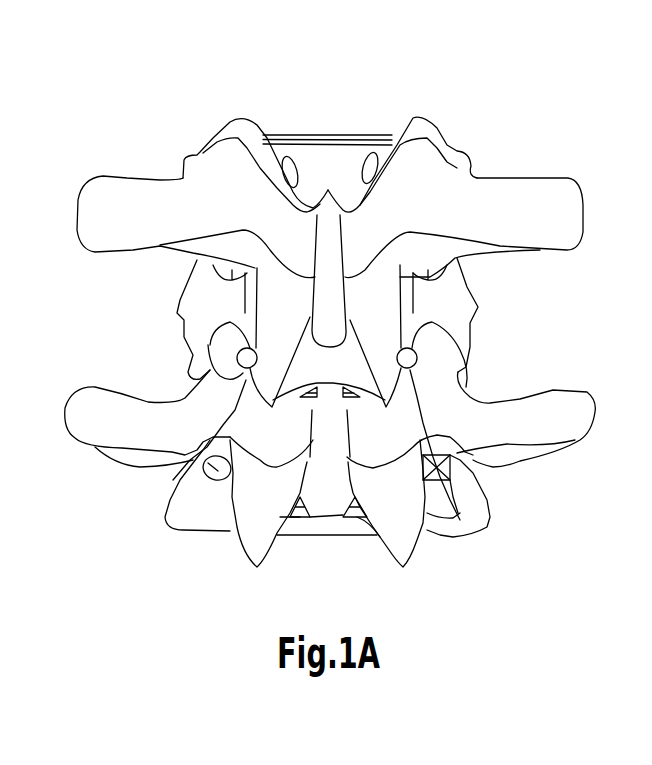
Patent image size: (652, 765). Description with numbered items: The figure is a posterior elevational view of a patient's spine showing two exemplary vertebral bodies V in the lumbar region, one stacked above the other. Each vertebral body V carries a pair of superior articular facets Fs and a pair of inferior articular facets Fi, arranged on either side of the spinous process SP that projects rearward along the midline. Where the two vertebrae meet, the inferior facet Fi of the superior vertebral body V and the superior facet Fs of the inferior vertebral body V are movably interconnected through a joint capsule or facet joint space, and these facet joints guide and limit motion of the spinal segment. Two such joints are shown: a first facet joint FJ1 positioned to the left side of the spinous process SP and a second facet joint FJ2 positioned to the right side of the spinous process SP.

The vertebral body V is at (361, 118).
The spinous process SP is at (332, 250).
The superior articular facet Fs is at (226, 150).
The inferior articular facet Fi is at (272, 320).
The first facet joint FJ1 is at (173, 480).
The second facet joint FJ2 is at (460, 520).